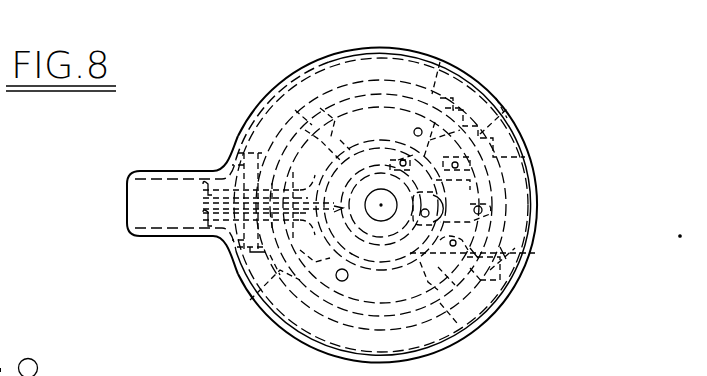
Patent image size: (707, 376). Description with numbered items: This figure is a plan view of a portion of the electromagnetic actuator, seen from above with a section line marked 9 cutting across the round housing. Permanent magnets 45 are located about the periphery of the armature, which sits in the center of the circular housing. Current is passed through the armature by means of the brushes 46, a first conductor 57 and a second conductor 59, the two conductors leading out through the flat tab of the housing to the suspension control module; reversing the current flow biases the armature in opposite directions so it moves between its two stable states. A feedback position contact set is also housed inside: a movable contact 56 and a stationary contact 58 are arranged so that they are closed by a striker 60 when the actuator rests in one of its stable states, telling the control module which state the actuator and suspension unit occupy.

The permanent magnets 45 is at (303, 70).
The brushes 46 is at (492, 104).
The movable contact 56 is at (522, 266).
The first conductor 57 is at (265, 125).
The stationary contact 58 is at (531, 199).
The second conductor 59 is at (258, 290).
The striker 60 is at (500, 148).
The section line 9- 9 is at (459, 61).